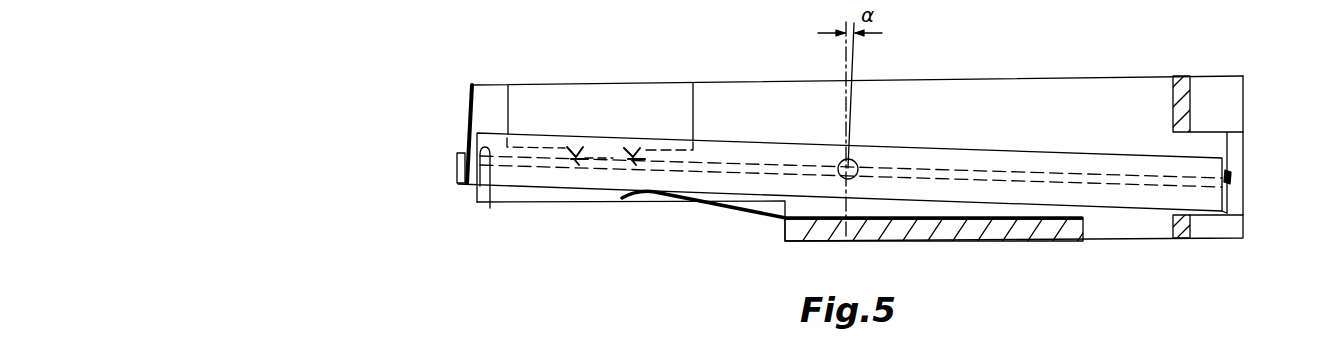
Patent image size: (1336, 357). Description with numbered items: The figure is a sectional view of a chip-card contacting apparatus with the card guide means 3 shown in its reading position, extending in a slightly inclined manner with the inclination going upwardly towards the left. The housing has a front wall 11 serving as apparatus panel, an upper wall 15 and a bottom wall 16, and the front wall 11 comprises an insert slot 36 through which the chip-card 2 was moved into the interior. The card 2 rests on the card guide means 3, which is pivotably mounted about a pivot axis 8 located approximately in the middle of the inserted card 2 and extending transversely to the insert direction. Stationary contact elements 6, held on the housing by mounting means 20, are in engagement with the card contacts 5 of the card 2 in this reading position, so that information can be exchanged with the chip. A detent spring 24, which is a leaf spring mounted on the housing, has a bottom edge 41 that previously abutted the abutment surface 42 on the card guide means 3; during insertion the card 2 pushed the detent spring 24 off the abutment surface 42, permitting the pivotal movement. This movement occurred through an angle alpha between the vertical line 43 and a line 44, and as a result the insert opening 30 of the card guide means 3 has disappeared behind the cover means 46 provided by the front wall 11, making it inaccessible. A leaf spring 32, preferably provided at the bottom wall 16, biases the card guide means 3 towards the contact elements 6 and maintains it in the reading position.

The chip-card 2 is at (1046, 172).
The card guide means 3 is at (968, 148).
The card contacts 5 is at (640, 163).
The contact elements 6 is at (580, 140).
The pivot axis 8 is at (856, 161).
The front wall 11 is at (1244, 100).
The upper wall 15 is at (979, 78).
The bottom wall 16 is at (1057, 230).
The mounting means 20 is at (510, 114).
The detent spring 24 is at (468, 96).
The insert opening 30 is at (1235, 178).
The leaf spring 32 is at (721, 211).
The insert slot 36 is at (1232, 152).
The bottom edge 41 is at (461, 186).
The abutment surface 42 is at (490, 208).
The vertical line 43 is at (846, 50).
The line 44 is at (856, 52).
The cover means 46 is at (1236, 205).